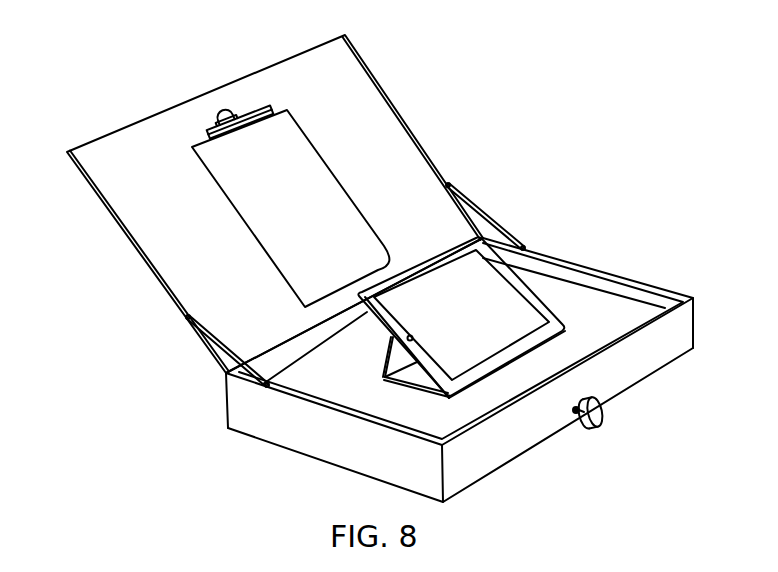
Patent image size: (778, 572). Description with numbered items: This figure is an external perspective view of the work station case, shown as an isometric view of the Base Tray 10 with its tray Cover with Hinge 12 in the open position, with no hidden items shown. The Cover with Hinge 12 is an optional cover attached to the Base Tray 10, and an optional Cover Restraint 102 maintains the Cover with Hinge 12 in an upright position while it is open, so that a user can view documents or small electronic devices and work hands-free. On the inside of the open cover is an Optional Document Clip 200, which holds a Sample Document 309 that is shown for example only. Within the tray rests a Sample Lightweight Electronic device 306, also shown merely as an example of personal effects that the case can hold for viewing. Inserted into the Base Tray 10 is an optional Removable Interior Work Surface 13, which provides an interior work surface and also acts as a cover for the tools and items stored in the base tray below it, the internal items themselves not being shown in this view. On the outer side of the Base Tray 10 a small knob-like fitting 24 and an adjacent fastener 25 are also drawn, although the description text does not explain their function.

The base tray 10 is at (690, 323).
The cover with hinge 12 is at (117, 184).
The removable interior work surface 13 is at (597, 300).
The knob / latch 24 is at (600, 414).
The fastener 25 is at (574, 414).
The cover restraint 102 is at (213, 350).
The optional document clip 200 is at (223, 100).
The sample lightweight electronic device 306 is at (457, 353).
The sample document 309 is at (317, 187).